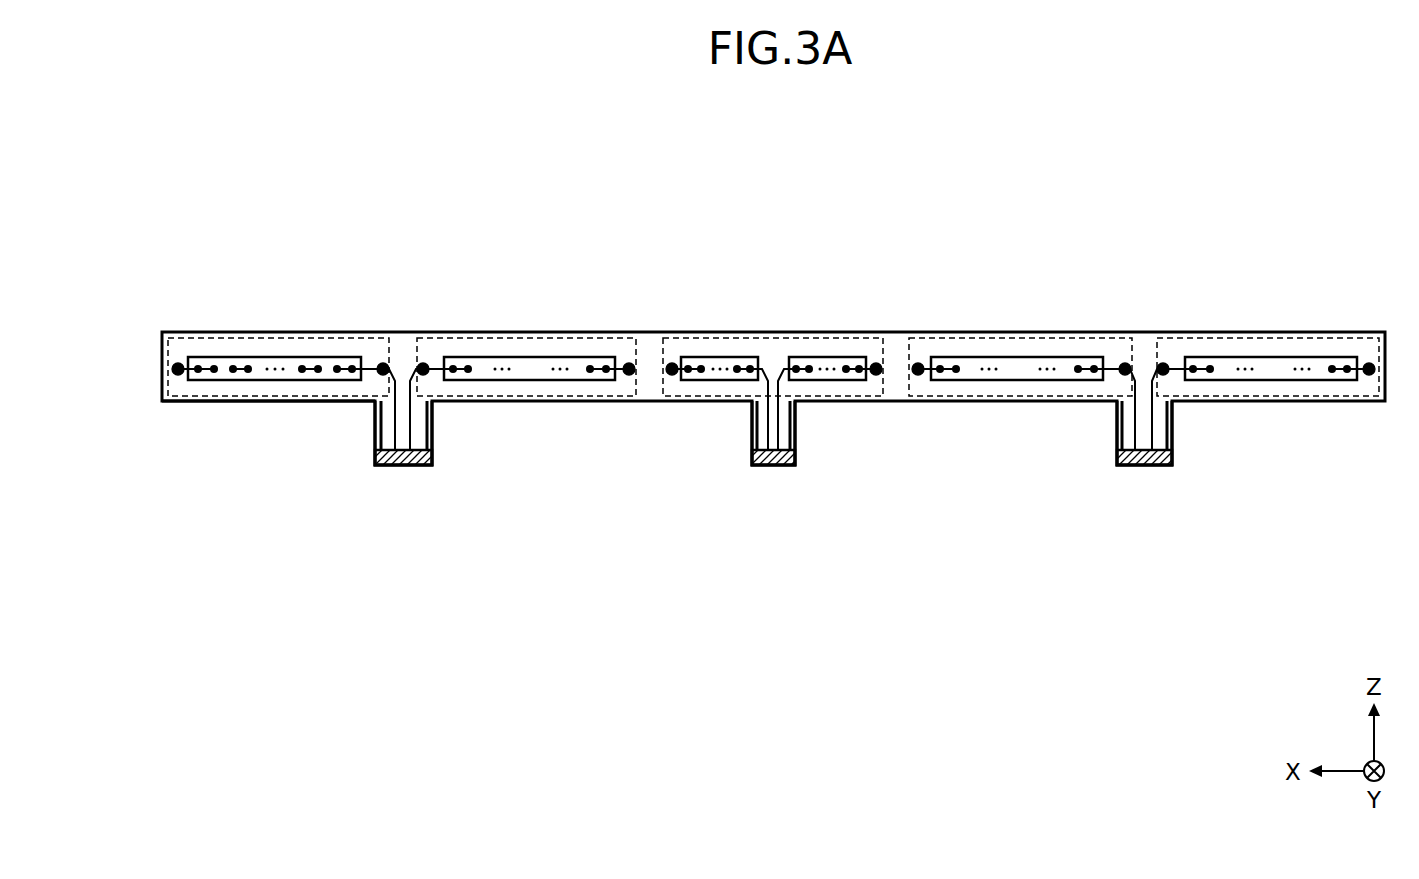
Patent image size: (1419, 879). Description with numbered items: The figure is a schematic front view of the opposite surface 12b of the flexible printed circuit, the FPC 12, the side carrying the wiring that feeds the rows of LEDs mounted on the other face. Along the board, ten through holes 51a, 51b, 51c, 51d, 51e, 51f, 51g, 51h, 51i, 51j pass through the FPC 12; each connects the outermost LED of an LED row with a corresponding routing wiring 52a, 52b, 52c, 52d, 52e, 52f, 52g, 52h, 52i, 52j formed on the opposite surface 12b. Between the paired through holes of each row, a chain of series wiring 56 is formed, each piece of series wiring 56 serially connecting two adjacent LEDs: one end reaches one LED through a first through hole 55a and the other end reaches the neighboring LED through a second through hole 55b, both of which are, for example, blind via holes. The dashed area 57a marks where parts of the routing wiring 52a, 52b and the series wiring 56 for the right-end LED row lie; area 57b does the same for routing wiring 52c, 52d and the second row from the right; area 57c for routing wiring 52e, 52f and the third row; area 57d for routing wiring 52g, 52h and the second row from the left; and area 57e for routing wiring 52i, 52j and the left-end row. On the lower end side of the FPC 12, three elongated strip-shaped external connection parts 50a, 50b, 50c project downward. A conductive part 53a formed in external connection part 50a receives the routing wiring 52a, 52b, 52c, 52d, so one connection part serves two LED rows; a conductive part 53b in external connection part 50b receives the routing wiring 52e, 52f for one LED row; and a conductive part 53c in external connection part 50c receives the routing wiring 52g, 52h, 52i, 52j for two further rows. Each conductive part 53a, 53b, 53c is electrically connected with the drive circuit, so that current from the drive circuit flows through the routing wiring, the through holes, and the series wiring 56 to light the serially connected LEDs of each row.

The FPC 12 is at (994, 166).
The opposite surface 12b is at (175, 392).
The external connection part 50a is at (375, 433).
The external connection part 50b is at (752, 433).
The external connection part 50c is at (1117, 433).
The through hole 51a is at (175, 364).
The through hole 51b is at (380, 364).
The through hole 51c is at (426, 364).
The through hole 51d is at (629, 364).
The through hole 51e is at (672, 364).
The through hole 51f is at (876, 364).
The through hole 51g is at (918, 364).
The through hole 51h is at (1124, 364).
The through hole 51i is at (1164, 364).
The through hole 51j is at (1369, 364).
The routing wiring 52a is at (255, 357).
The routing wiring 52b is at (395, 390).
The routing wiring 52c is at (410, 390).
The routing wiring 52d is at (537, 357).
The routing wiring 52e is at (718, 357).
The routing wiring 52f is at (837, 357).
The routing wiring 52g is at (1020, 357).
The routing wiring 52h is at (1135, 390).
The routing wiring 52i is at (1152, 390).
The routing wiring 52j is at (1282, 357).
The conductive part 53a is at (402, 466).
The conductive part 53b is at (784, 466).
The conductive part 53c is at (1145, 466).
The through hole 55a is at (456, 364).
The through hole 55b is at (214, 364).
The series wiring 56 is at (198, 364).
The area 57a is at (282, 338).
The area 57b is at (578, 338).
The area 57c is at (883, 396).
The area 57d is at (1050, 338).
The area 57e is at (1307, 338).